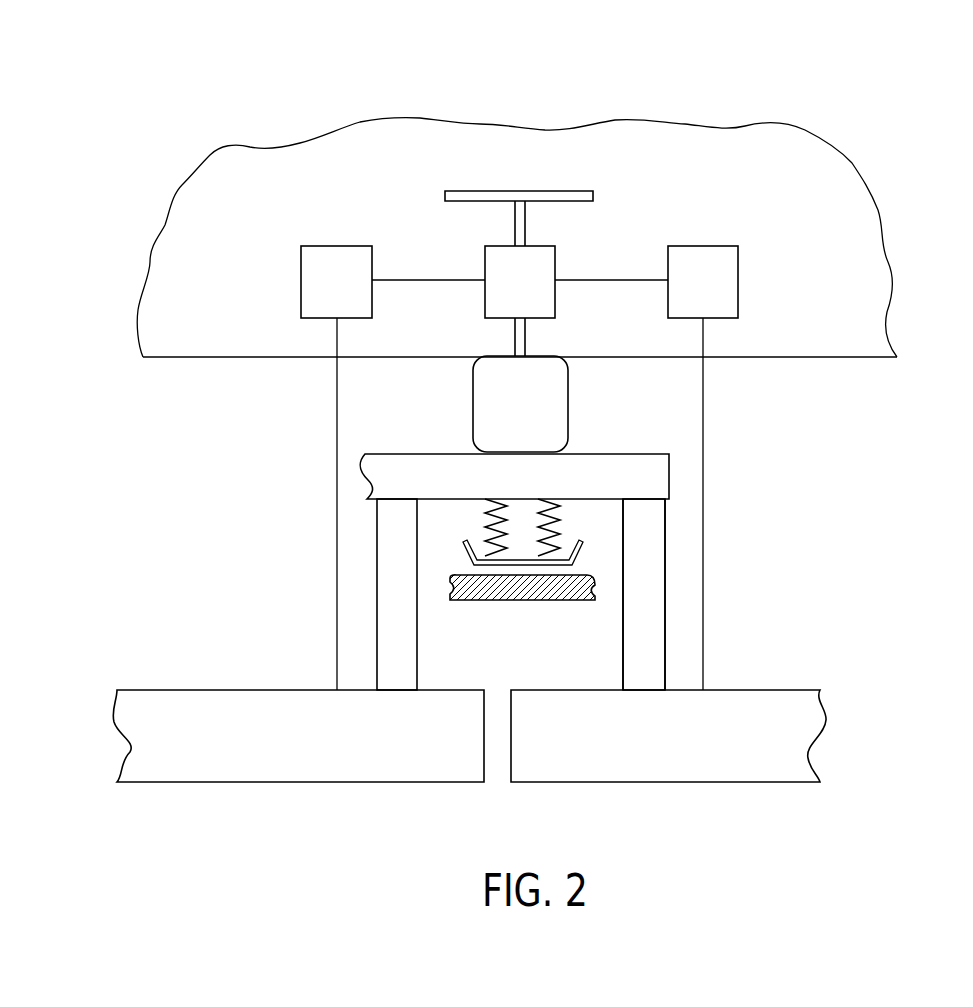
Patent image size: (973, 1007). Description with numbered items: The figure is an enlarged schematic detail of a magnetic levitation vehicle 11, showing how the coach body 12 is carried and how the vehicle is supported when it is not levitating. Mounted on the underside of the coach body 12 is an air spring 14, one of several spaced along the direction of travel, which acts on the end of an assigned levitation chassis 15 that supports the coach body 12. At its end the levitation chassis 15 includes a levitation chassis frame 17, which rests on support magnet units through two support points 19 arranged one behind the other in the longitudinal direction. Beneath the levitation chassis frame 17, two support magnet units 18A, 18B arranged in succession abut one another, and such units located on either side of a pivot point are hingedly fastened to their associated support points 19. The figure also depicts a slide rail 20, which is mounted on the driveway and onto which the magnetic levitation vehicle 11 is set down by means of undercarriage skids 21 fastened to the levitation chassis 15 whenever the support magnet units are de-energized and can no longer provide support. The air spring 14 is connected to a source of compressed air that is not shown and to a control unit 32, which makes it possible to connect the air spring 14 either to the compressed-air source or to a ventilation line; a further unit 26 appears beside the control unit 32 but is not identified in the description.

The magnetic levitation vehicle 11 is at (820, 128).
The coach body 12 is at (807, 343).
The air spring 14 is at (557, 400).
The levitation chassis 15 is at (616, 452).
The levitation chassis frame 17 is at (655, 573).
The support magnet unit 18A is at (272, 770).
The support magnet unit 18B is at (597, 770).
The support point 19 is at (408, 652).
The slide rail 20 is at (456, 588).
The undercarriage skid 21 is at (467, 552).
The controller unit 26 is at (313, 304).
The control unit 32 is at (496, 304).